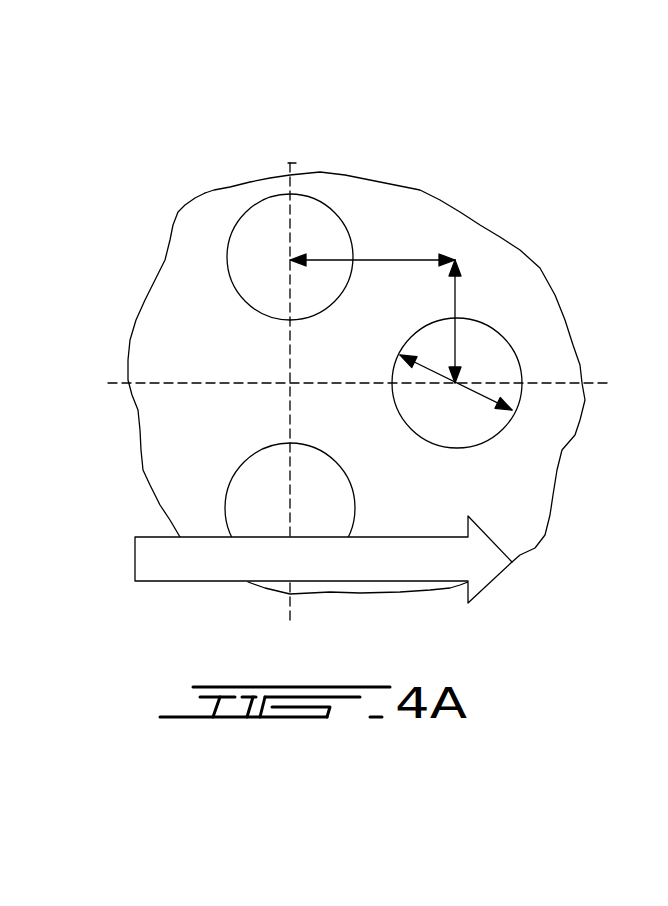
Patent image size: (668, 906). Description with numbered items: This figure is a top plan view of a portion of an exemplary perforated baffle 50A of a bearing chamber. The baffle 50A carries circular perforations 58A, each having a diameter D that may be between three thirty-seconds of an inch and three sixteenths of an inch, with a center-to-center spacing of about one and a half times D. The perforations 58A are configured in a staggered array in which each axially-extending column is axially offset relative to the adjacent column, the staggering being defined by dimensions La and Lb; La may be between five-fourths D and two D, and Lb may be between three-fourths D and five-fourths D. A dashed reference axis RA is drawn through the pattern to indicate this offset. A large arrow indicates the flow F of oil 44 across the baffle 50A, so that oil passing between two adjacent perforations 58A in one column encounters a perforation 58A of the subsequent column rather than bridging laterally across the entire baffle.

The baffle 50A is at (205, 188).
The reference axis RA is at (293, 163).
The circular perforations 58A is at (407, 372).
The oil 44 is at (323, 559).
The dimension La is at (372, 244).
The dimension Lb is at (473, 321).
The diameter D is at (456, 391).